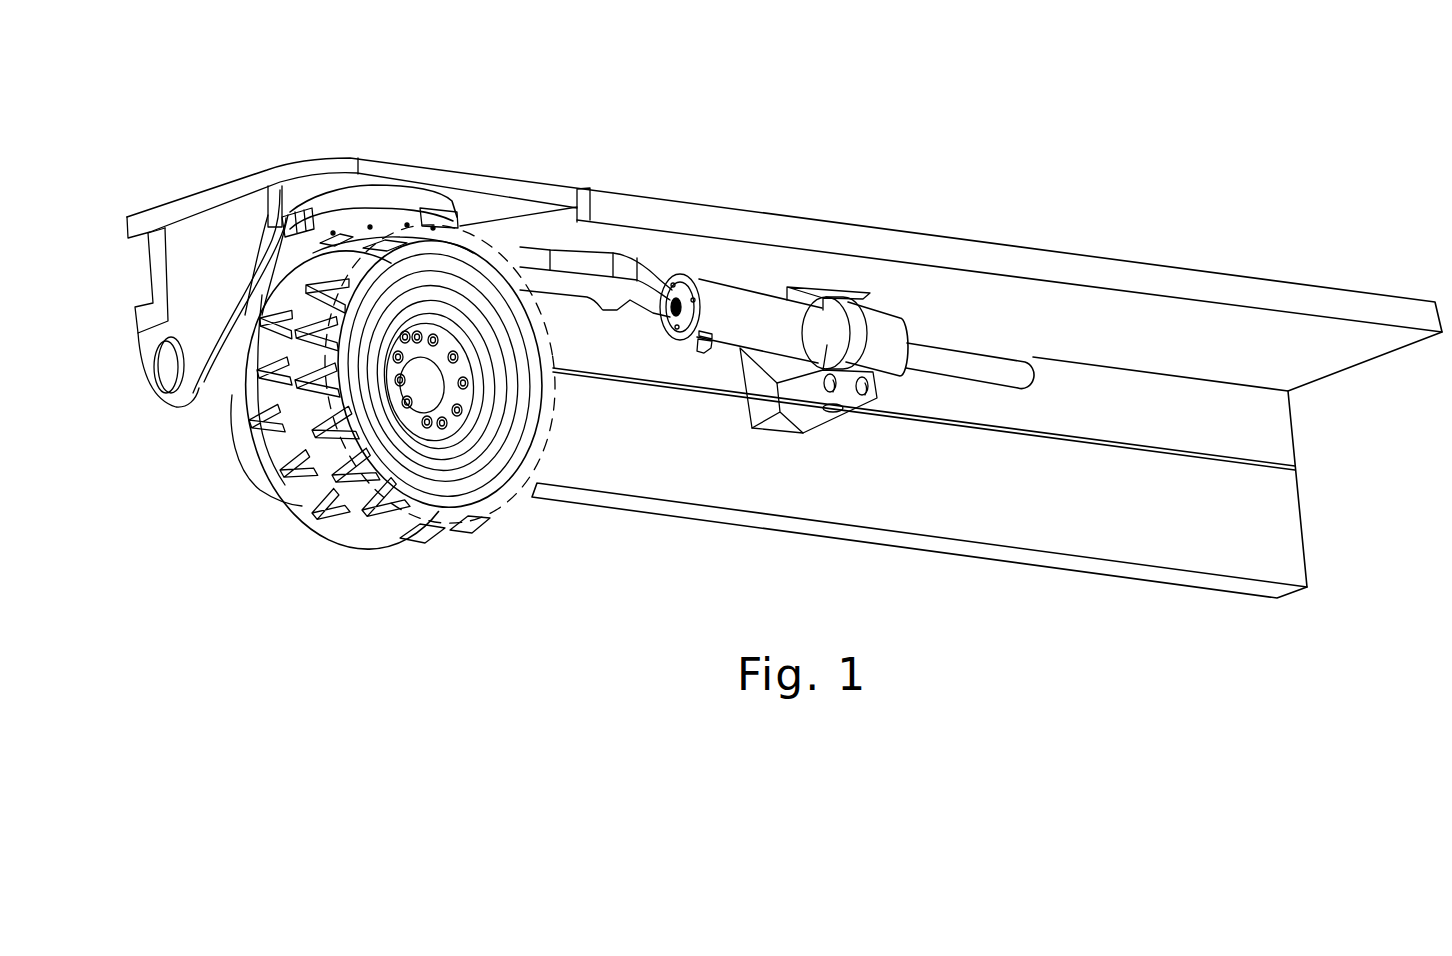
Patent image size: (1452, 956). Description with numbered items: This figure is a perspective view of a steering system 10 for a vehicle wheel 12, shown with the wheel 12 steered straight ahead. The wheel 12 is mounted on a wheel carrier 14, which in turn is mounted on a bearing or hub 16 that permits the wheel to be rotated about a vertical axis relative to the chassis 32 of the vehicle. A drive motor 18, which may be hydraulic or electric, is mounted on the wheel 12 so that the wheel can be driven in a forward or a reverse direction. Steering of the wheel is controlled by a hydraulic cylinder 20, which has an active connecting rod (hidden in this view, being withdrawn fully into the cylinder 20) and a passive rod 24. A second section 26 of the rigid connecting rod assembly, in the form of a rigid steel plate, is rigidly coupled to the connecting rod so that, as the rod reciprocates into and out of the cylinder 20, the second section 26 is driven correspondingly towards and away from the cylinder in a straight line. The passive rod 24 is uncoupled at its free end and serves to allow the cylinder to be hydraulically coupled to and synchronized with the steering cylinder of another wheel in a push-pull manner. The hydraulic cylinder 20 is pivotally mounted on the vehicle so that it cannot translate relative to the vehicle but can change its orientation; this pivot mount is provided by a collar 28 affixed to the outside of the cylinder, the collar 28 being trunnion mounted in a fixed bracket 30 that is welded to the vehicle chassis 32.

The steering system 10 is at (651, 171).
The vehicle wheel 12 is at (473, 488).
The wheel carrier 14 is at (268, 262).
The bearing or hub 16 is at (347, 200).
The drive motor 18 is at (258, 481).
The hydraulic cylinder 20 is at (752, 305).
The passive rod 24 is at (962, 353).
The second section of the rigid connecting rod assembly 26 is at (585, 260).
The collar 28 is at (852, 327).
The fixed bracket 30 is at (753, 405).
The chassis 32 is at (1080, 267).